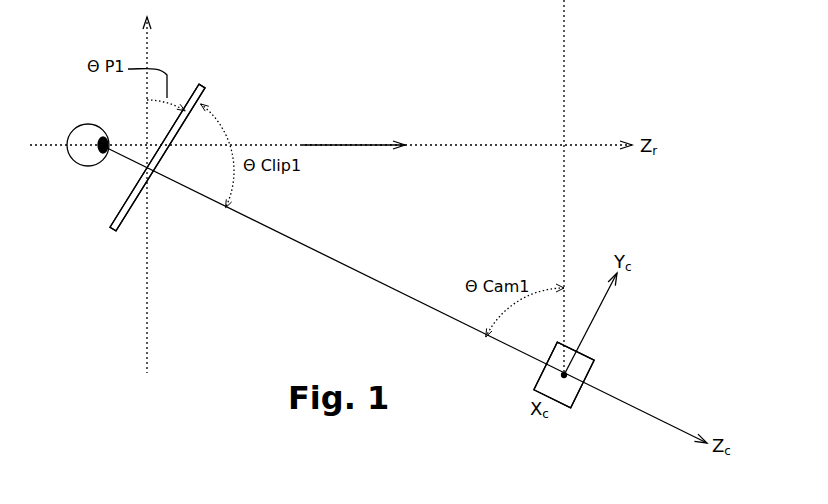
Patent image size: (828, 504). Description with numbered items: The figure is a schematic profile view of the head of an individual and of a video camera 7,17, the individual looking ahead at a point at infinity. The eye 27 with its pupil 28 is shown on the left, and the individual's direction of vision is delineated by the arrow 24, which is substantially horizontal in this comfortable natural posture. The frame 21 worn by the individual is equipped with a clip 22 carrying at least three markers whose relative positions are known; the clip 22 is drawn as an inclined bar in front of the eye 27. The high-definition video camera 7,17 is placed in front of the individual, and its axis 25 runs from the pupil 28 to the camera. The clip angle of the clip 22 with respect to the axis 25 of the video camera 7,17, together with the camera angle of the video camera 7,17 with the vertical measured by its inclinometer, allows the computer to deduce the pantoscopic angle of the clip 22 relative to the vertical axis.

The video camera 7 is at (613, 372).
The video camera 17 is at (582, 368).
The spectacle frame 21 is at (195, 78).
The clip 22 is at (205, 97).
The arrow 24 is at (337, 142).
The axis of the video camera 25 is at (362, 273).
The eye 27 is at (82, 137).
The pupil 28 is at (108, 139).